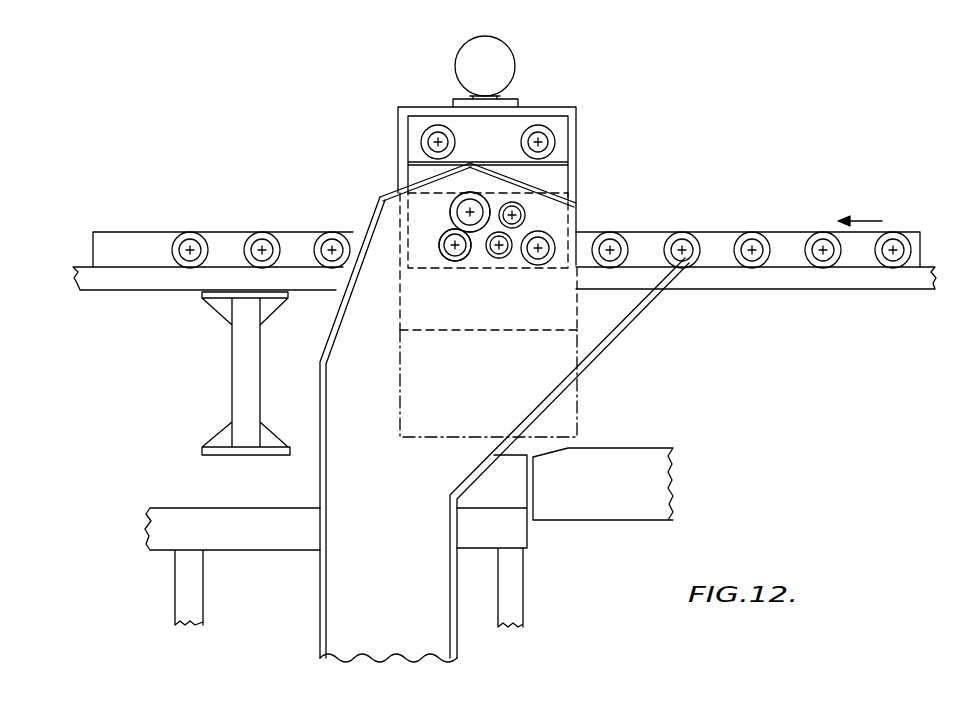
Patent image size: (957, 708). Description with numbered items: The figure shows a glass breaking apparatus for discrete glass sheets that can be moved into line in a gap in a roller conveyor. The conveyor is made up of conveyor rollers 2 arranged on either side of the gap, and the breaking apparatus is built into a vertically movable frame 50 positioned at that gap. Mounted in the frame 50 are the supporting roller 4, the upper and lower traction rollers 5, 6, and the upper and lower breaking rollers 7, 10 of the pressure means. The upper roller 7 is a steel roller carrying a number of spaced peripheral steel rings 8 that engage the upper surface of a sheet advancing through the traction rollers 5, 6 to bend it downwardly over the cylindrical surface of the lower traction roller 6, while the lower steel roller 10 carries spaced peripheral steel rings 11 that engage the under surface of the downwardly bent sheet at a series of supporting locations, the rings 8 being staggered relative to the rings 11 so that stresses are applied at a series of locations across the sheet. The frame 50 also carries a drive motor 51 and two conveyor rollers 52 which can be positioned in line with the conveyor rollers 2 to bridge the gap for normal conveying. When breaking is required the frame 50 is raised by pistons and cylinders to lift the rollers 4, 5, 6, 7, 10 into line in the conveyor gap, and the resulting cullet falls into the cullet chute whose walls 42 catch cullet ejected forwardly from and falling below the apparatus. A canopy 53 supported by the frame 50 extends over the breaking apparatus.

The conveyor rollers 2 is at (190, 232).
The supporting roller 4 is at (539, 266).
The upper traction roller 5 is at (526, 215).
The lower traction roller 6 is at (498, 259).
The upper roller 7 is at (458, 203).
The peripheral steel rings 8 is at (446, 213).
The lower steel roller 10 is at (457, 262).
The peripheral steel rings 11 is at (445, 258).
The cullet chute walls 42 is at (320, 478).
The vertically movable frame 50 is at (578, 134).
The drive motor 51 is at (498, 73).
The conveyor rollers 52 is at (455, 142).
The canopy 53 is at (380, 196).